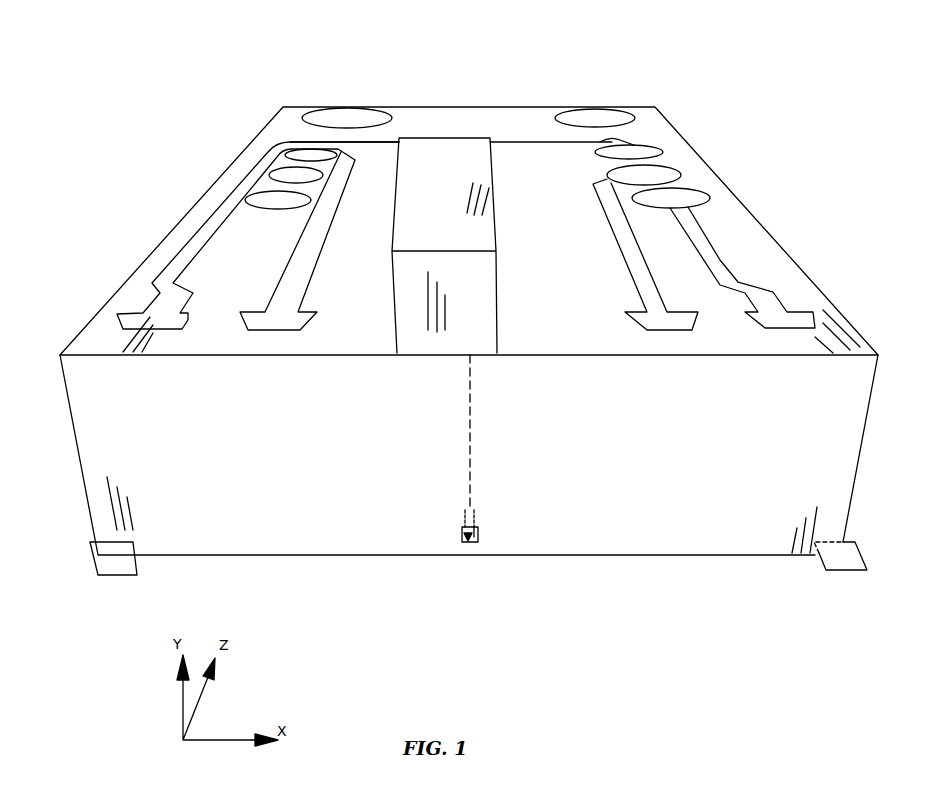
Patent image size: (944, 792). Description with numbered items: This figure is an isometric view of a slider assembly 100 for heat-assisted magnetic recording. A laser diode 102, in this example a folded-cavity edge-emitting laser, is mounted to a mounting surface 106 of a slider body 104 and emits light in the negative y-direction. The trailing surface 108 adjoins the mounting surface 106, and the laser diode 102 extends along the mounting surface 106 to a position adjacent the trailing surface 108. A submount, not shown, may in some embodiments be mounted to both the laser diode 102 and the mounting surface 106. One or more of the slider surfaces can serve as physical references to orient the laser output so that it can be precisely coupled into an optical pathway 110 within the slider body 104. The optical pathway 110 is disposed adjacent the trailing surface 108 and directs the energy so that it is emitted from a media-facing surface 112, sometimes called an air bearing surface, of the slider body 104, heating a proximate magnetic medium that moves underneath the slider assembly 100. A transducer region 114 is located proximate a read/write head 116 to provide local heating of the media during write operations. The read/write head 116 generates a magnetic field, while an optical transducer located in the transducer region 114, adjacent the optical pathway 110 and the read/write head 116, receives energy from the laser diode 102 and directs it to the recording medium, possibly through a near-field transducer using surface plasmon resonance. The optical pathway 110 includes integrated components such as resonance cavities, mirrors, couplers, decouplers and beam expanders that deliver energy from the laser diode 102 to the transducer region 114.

The slider assembly 100 is at (665, 50).
The laser diode 102 is at (408, 213).
The slider body 104 is at (706, 133).
The mounting surface 106 is at (737, 227).
The trailing surface 108 is at (120, 576).
The optical pathway 110 is at (470, 430).
The media-facing surface 112 is at (857, 571).
The transducer region 114 is at (468, 544).
The read/write head 116 is at (478, 540).